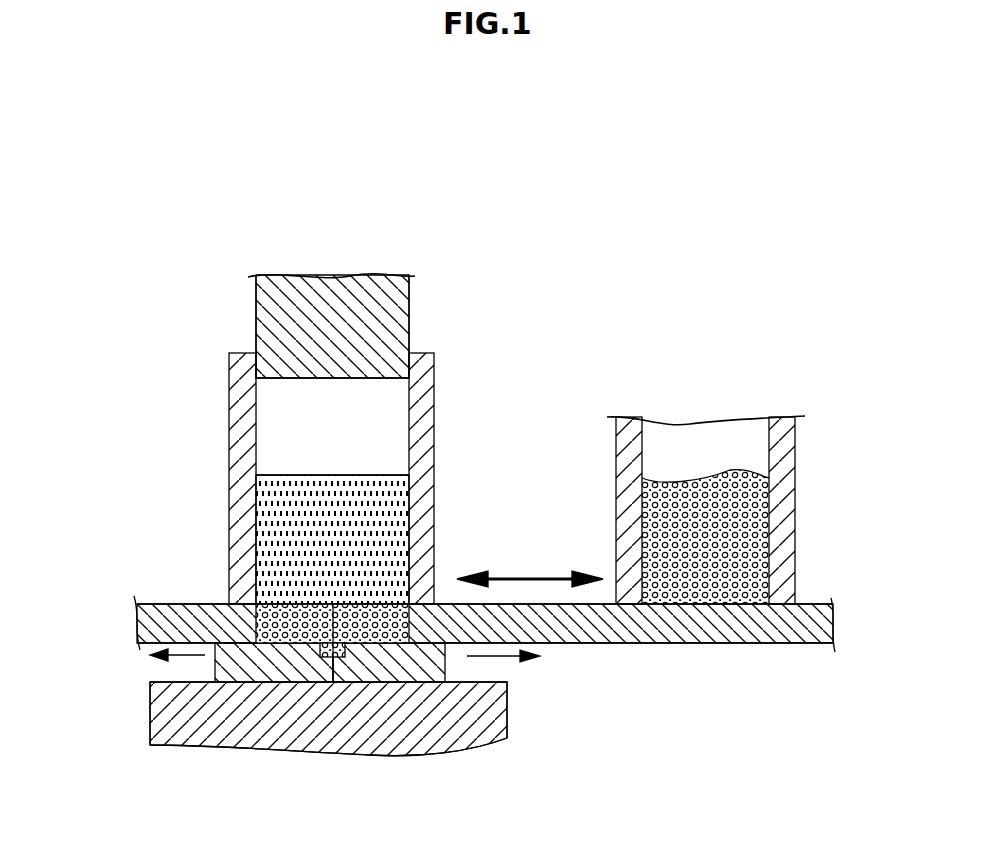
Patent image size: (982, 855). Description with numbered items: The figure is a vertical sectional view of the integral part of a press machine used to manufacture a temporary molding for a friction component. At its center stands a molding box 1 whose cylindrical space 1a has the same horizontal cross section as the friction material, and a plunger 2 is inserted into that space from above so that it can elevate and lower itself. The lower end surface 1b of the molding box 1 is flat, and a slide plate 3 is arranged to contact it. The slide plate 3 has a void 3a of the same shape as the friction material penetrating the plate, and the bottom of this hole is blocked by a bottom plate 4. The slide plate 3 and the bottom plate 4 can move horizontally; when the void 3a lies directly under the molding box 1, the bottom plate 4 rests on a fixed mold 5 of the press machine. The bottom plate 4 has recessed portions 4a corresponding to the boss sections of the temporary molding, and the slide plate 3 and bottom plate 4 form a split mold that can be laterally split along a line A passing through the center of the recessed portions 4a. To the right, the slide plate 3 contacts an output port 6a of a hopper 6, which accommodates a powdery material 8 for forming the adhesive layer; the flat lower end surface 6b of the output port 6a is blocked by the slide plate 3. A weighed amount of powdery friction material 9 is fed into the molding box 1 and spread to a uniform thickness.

The molding box 1 is at (427, 410).
The cylindrical space 1a is at (285, 402).
The lower end surface 1b is at (185, 622).
The plunger 2 is at (400, 322).
The slide plate 3 is at (662, 637).
The void 3a is at (270, 605).
The bottom plate 4 is at (415, 664).
The recessed portions 4a is at (317, 655).
The fixed mold 5 is at (158, 712).
The hopper 6 is at (783, 450).
The output port 6a is at (690, 598).
The lower end surface 6b is at (785, 635).
The powdery material 8 is at (697, 478).
The powdery friction material 9 is at (318, 487).
The line A is at (375, 682).